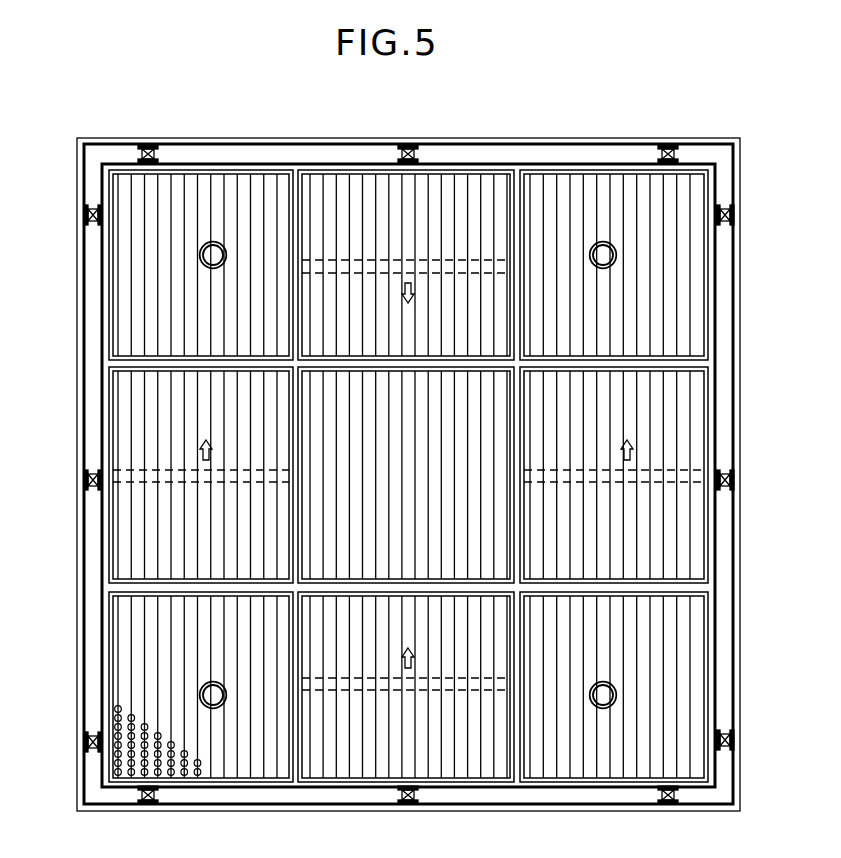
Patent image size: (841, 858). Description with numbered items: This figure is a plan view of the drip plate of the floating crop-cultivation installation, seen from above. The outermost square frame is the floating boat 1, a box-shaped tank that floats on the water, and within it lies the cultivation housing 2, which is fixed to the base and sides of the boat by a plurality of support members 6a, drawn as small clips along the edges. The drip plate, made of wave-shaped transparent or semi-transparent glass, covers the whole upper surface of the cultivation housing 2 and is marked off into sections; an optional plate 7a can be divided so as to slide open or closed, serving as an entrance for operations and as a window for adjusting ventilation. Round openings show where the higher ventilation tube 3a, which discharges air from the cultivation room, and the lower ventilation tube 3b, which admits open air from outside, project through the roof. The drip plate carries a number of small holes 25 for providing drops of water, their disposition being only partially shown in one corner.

The floating boat 1 is at (175, 138).
The cultivation housing 2 is at (280, 164).
The plate 7a is at (368, 190).
The support member 6a is at (92, 226).
The higher ventilation tube 3a is at (200, 265).
The lower ventilation tube 3b is at (213, 708).
The small holes 25 is at (116, 706).